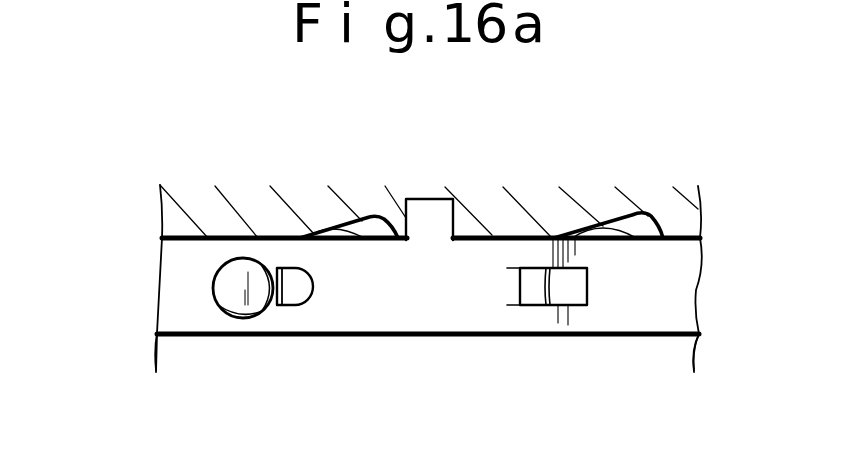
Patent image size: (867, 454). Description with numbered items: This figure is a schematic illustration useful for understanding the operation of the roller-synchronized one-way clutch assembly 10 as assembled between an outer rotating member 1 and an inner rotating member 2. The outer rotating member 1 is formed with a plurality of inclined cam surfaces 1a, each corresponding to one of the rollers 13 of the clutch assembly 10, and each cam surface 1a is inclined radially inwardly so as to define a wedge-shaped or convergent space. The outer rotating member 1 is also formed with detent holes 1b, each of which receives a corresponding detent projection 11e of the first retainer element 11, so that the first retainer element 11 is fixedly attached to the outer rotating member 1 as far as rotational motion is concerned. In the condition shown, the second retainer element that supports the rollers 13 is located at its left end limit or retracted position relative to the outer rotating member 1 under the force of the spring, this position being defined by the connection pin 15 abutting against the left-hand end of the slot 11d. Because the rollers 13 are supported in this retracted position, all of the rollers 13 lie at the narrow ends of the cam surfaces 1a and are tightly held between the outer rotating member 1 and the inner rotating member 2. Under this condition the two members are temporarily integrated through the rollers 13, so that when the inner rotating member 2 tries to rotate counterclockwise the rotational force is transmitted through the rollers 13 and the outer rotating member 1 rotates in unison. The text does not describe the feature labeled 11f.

The outer rotating member 1 is at (698, 203).
The cam surfaces 1a is at (367, 217).
The detent holes 1b is at (422, 199).
The inner rotating member 2 is at (682, 356).
The roller-synchronized one-way clutch assembly 10 is at (153, 293).
The first retainer element 11 is at (697, 282).
The slot 11d is at (295, 305).
The detent projection 11e is at (444, 187).
The slot 11f is at (512, 286).
The rollers 13 is at (322, 230).
The connection pin 15 is at (240, 318).